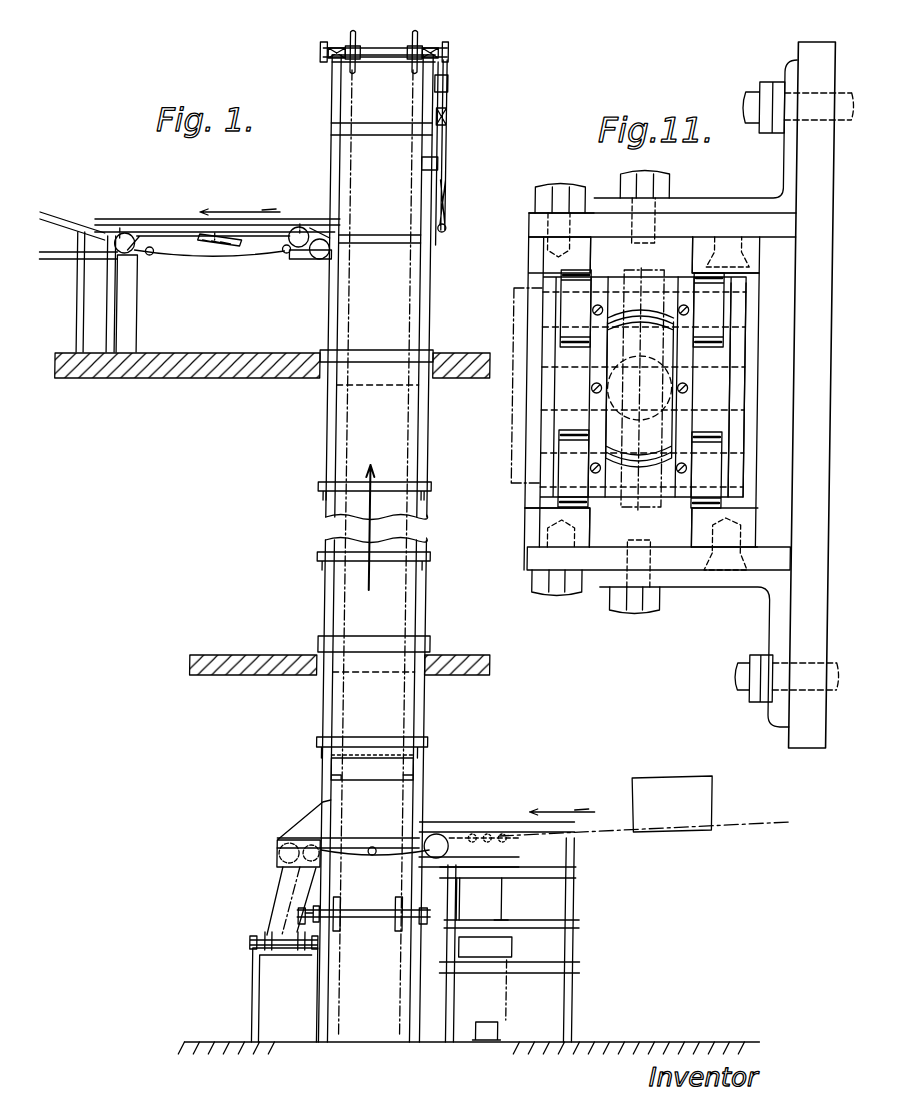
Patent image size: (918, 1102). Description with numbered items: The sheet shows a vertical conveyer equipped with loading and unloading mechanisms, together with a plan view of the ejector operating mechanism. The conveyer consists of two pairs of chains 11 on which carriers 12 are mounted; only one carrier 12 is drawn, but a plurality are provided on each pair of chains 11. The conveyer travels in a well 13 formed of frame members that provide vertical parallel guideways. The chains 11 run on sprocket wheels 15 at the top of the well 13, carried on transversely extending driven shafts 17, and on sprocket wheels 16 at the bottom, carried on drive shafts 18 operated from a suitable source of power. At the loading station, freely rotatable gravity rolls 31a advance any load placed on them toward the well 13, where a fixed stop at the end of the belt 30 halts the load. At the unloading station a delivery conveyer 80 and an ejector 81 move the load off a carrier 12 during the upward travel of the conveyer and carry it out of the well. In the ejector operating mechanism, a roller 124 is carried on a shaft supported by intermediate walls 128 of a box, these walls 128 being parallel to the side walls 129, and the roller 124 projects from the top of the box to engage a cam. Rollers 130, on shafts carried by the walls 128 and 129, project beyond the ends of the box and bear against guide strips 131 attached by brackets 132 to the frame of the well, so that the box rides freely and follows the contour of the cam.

In FIG. 1, the chains 11 is at (342, 700).
In FIG. 1, the carrier 12 is at (372, 767).
In FIG. 1, the well 13 is at (376, 552).
In FIG. 1, the sprocket wheels 15 is at (384, 39).
In FIG. 1, the sprocket wheels 16 is at (348, 925).
In FIG. 1, the shafts 17 is at (379, 60).
In FIG. 1, the shafts 18 is at (384, 913).
In FIG. 1, the belt 30 is at (374, 835).
In FIG. 1, the outer set of rolls 31a is at (541, 838).
In FIG. 1, the delivery conveyer 80 is at (248, 258).
In FIG. 1, the ejector 81 is at (454, 147).
In FIG. 11, the roller 124 is at (638, 345).
In FIG. 11, the walls 128 is at (602, 417).
In FIG. 11, the side walls 129 is at (553, 310).
In FIG. 11, the rollers 130 is at (710, 287).
In FIG. 11, the guide strips 131 is at (716, 287).
In FIG. 11, the brackets 132 is at (684, 205).